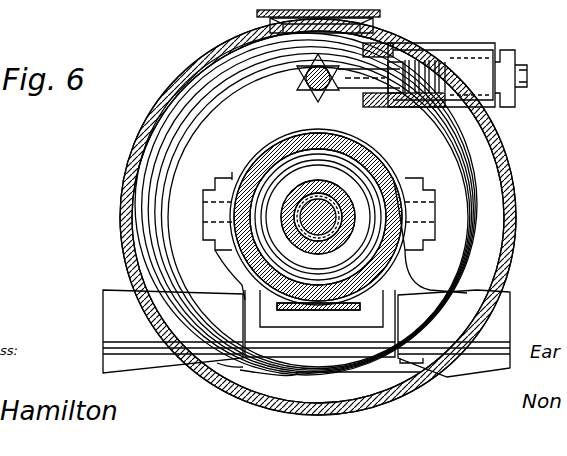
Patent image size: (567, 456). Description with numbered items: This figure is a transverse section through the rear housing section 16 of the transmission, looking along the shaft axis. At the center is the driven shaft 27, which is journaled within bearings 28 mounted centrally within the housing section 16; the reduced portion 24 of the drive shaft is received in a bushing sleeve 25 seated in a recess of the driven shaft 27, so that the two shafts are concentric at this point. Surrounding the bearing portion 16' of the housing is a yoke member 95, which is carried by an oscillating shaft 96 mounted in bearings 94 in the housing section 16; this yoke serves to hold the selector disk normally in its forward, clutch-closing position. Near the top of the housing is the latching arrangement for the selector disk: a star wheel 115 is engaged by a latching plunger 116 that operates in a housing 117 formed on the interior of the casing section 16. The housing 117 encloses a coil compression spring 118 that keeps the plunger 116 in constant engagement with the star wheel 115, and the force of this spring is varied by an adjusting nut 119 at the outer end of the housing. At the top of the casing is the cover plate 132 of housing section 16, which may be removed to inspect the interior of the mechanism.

The rear housing section 16 is at (291, 217).
The bearing portion 16' is at (295, 194).
The reduced portion 24 is at (300, 170).
The bushing sleeve 25 is at (345, 183).
The driven shaft 27 is at (290, 230).
The bearings 28 is at (380, 193).
The bearings 94 is at (438, 292).
The yoke member 95 is at (232, 180).
The oscillating shaft 96 is at (340, 303).
The star wheel 115 is at (298, 71).
The latching plunger 116 is at (370, 72).
The housing 117 is at (402, 100).
The coil compression spring 118 is at (423, 107).
The adjusting nut 119 is at (526, 38).
The cover plate 132 is at (257, 13).